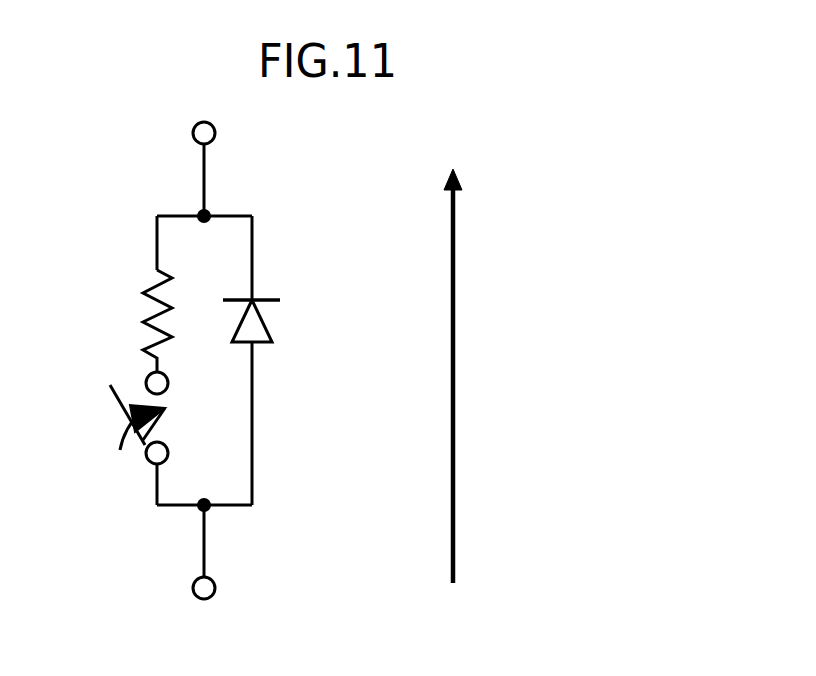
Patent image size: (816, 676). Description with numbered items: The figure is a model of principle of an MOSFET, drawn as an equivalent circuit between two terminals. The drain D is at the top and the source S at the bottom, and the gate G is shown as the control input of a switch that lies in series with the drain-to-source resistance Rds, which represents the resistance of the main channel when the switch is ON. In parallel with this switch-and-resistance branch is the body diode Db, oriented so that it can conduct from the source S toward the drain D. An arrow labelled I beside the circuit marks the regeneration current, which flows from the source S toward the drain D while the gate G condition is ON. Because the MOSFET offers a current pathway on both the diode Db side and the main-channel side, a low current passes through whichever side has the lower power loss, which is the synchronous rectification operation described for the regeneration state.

The drain D is at (173, 172).
The source S is at (180, 548).
The gate G is at (100, 418).
The drain-to-source resistance Rds is at (117, 321).
The body diode Db is at (270, 321).
The regeneration current I is at (589, 376).